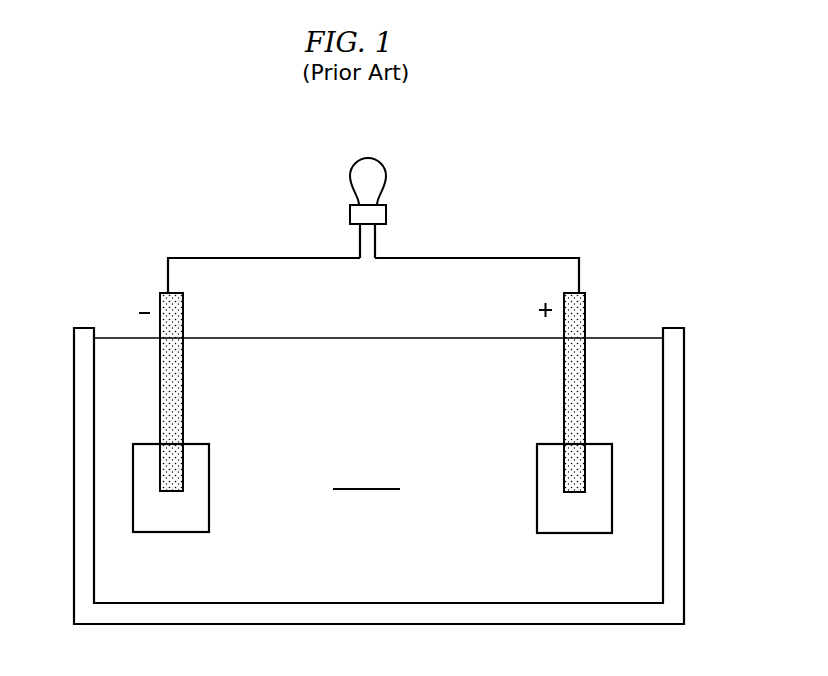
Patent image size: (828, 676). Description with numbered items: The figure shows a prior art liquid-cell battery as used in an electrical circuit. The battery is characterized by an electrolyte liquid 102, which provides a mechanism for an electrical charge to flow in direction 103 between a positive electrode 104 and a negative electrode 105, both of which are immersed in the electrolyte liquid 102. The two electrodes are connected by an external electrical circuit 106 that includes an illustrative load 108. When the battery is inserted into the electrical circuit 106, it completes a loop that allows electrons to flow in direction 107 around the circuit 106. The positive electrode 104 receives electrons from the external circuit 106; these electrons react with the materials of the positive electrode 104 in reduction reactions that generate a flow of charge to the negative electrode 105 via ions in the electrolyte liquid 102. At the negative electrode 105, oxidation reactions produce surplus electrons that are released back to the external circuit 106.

The electrolyte liquid 102 is at (440, 339).
The direction of charge flow 103 is at (372, 489).
The positive electrode 104 is at (587, 318).
The negative electrode 105 is at (186, 318).
The electrical circuit 106 is at (320, 262).
The direction of electron flow 107 is at (237, 243).
The load 108 is at (384, 178).